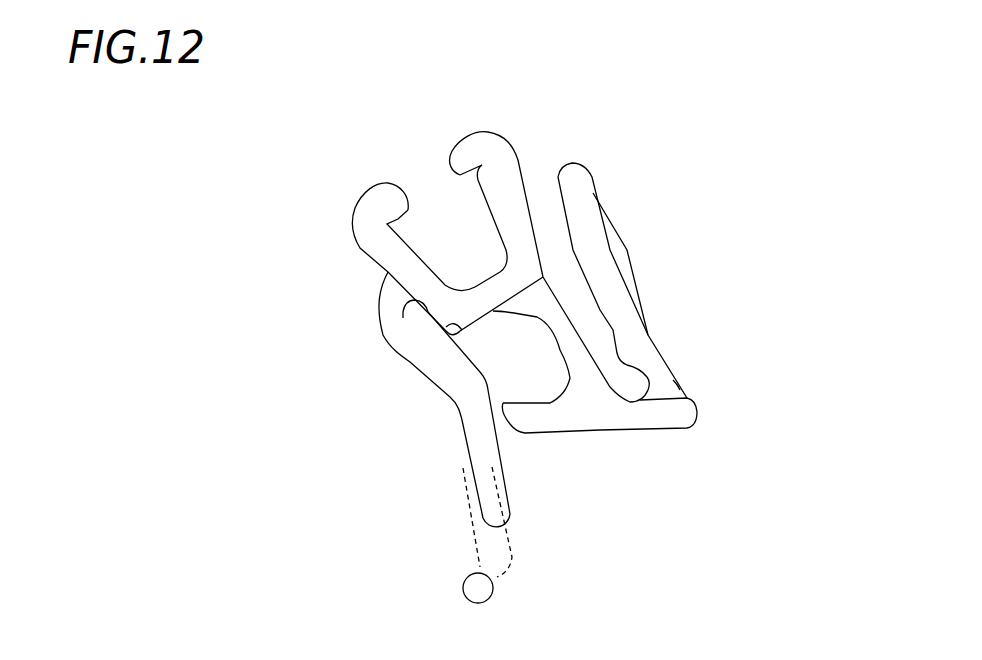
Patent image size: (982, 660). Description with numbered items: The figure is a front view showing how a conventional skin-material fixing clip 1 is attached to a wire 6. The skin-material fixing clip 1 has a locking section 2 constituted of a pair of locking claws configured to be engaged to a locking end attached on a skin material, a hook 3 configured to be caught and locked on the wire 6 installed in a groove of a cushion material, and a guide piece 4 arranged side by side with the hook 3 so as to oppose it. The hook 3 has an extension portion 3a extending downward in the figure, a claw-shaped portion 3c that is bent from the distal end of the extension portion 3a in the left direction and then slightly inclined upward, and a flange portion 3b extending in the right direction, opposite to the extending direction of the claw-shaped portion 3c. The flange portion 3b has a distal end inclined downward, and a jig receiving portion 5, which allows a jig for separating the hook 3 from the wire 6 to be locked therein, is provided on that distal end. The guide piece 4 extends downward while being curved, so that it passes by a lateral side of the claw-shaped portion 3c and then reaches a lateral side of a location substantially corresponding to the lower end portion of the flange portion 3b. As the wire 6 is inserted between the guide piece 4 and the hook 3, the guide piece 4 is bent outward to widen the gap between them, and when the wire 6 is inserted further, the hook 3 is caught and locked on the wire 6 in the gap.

The skin-material fixing clip 1 is at (675, 128).
The locking section 2 is at (490, 142).
The hook 3 is at (607, 377).
The extension portion 3a is at (560, 327).
The flange portion 3b is at (680, 410).
The claw-shaped portion 3c is at (532, 418).
The guide piece 4 is at (418, 358).
The jig receiving portion 5 is at (583, 233).
The wire 6 is at (485, 587).